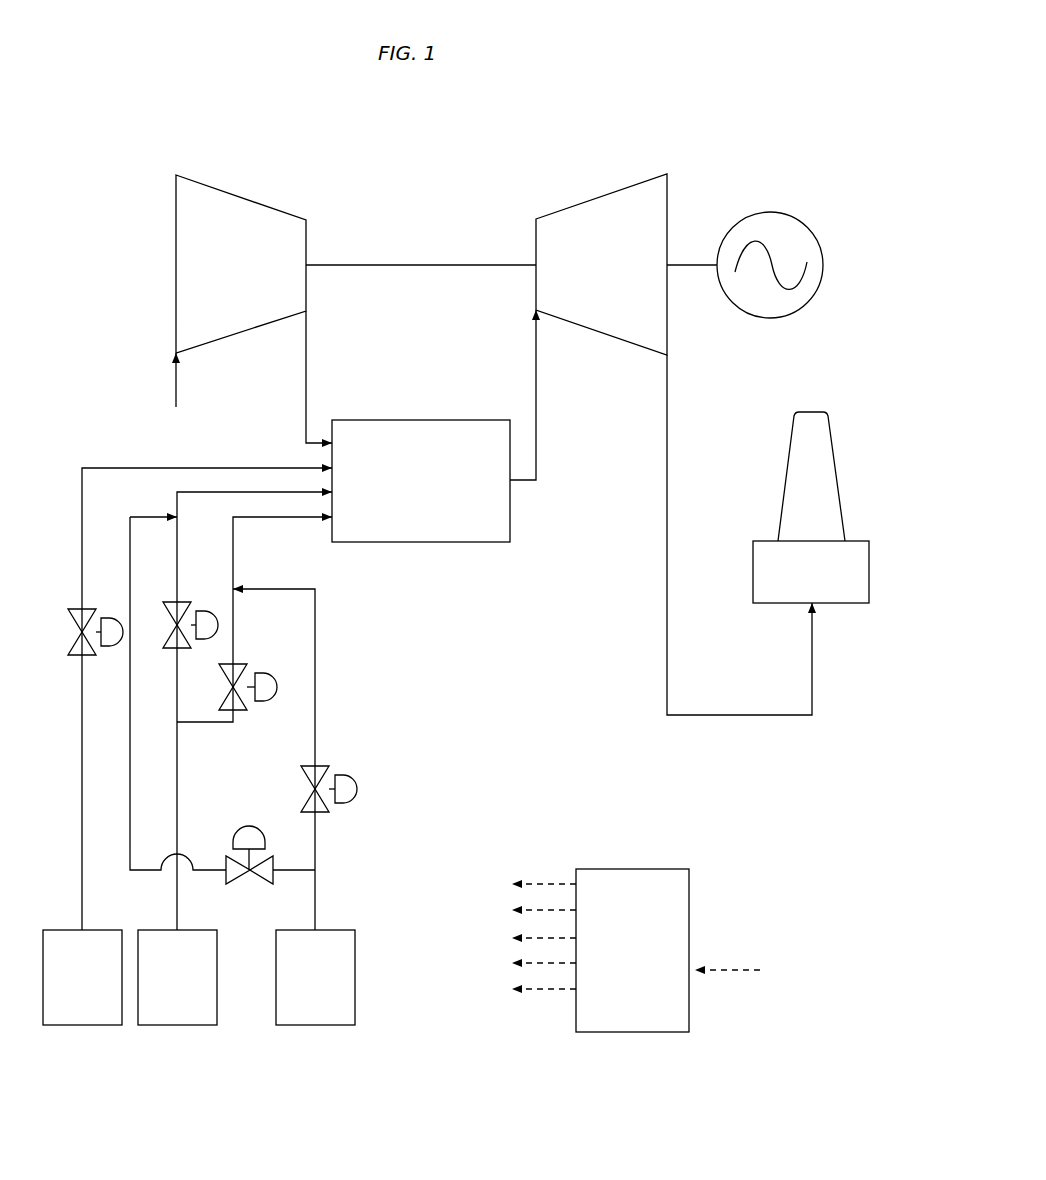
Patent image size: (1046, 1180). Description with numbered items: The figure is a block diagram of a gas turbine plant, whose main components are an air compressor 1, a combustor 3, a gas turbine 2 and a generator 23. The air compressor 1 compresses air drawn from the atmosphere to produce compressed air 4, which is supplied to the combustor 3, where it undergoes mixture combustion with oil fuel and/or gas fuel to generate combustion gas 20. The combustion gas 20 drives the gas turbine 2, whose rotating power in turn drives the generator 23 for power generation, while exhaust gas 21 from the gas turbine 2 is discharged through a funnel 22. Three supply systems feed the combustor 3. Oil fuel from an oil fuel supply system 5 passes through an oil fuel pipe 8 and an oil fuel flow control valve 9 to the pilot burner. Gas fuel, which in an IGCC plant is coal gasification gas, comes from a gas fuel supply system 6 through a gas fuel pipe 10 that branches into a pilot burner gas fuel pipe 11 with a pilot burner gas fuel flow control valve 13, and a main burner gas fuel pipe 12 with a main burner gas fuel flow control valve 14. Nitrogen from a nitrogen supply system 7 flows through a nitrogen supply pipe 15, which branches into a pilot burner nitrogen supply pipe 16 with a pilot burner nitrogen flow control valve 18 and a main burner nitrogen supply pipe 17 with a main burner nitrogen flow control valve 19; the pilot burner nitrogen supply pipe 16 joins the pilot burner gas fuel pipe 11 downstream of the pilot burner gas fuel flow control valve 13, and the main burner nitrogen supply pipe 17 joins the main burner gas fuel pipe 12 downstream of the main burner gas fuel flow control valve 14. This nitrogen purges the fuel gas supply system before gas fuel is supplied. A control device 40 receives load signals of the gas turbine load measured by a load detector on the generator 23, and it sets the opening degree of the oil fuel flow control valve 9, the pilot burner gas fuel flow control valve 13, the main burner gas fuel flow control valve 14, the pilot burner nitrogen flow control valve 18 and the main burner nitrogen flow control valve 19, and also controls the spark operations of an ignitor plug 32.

The air compressor 1 is at (241, 291).
The gas turbine 2 is at (601, 264).
The combustor 3 is at (421, 481).
The compressed air 4 is at (306, 388).
The oil fuel supply system 5 is at (82, 977).
The gas fuel supply system 6 is at (177, 977).
The nitrogen supply system 7 is at (315, 977).
The oil fuel pipe 8 is at (82, 722).
The oil fuel flow control valve 9 is at (75, 617).
The gas fuel pipe 10 is at (178, 771).
The pilot burner gas fuel pipe 11 is at (222, 492).
The main burner gas fuel pipe 12 is at (234, 553).
The pilot burner gas fuel flow control valve 13 is at (219, 623).
The main burner gas fuel flow control valve 14 is at (277, 683).
The nitrogen supply pipe 15 is at (317, 910).
The pilot burner nitrogen supply pipe 16 is at (131, 820).
The main burner nitrogen supply pipe 17 is at (317, 843).
The pilot burner nitrogen flow control valve 18 is at (243, 880).
The main burner nitrogen flow control valve 19 is at (357, 781).
The combustion gas 20 is at (537, 447).
The exhaust gas 21 is at (667, 477).
The funnel 22 is at (811, 507).
The generator 23 is at (776, 212).
The ignitor plug 32 is at (576, 1018).
The control device 40 is at (689, 910).